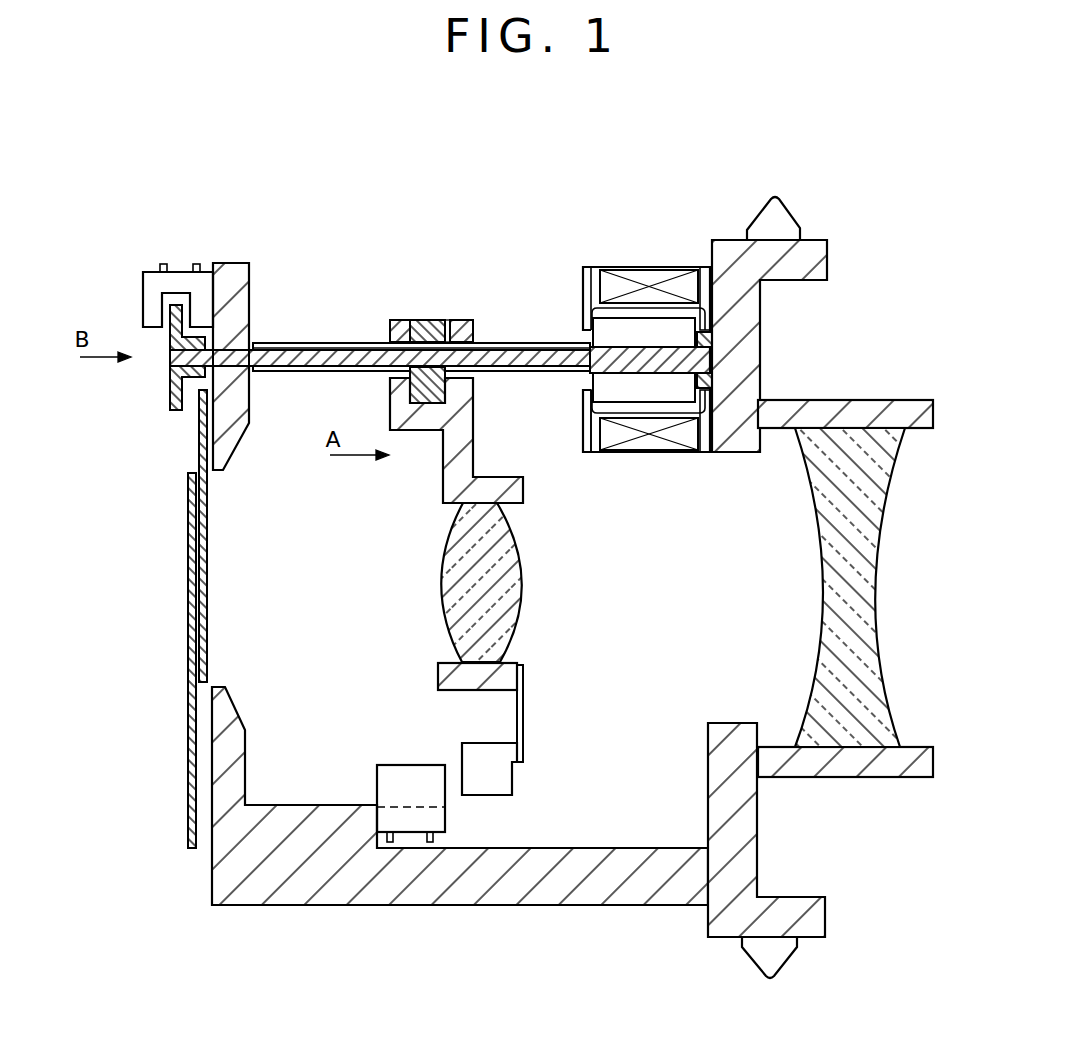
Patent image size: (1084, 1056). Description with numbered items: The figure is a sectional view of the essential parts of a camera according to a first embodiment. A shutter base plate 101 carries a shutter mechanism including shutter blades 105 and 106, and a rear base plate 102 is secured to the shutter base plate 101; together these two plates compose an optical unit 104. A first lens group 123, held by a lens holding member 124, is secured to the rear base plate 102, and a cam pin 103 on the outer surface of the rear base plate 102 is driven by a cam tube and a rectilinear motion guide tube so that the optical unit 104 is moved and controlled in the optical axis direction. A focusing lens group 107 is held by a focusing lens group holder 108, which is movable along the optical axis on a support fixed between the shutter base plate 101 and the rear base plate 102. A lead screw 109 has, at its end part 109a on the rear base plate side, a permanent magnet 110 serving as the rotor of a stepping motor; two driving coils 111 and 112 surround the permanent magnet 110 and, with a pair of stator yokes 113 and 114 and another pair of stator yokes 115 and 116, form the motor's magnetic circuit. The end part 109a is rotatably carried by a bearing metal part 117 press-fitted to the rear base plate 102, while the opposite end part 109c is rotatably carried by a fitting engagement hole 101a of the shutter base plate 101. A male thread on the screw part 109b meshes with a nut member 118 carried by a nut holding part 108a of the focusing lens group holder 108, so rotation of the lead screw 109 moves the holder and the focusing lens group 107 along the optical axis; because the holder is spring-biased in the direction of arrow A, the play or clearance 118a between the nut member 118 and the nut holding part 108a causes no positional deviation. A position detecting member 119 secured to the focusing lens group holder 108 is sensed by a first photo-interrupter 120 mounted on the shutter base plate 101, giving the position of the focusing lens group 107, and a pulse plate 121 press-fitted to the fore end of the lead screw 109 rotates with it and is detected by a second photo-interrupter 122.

The shutter base plate 101 is at (302, 888).
The fitting engagement hole 101a is at (222, 352).
The rear base plate 102 is at (733, 243).
The cam pin 103 is at (783, 217).
The optical unit 104 is at (434, 945).
The shutter blade 105 is at (188, 668).
The shutter blade 106 is at (207, 540).
The focusing lens group 107 is at (458, 612).
The focusing lens group holder 108 is at (496, 478).
The nut holding part 108a is at (400, 320).
The lead screw 109 is at (540, 355).
The end part of lead screw 109a is at (735, 360).
The screw part 109b is at (352, 343).
The end part of lead screw 109c is at (230, 345).
The permanent magnet 110 is at (634, 330).
The driving coil 111 is at (650, 268).
The driving coil 112 is at (650, 452).
The stator yoke 113 is at (592, 268).
The stator yoke 114 is at (708, 268).
The stator yoke 115 is at (597, 452).
The stator yoke 116 is at (704, 452).
The bearing metal part 117 is at (735, 340).
The nut member 118 is at (428, 320).
The play or clearance 118a is at (448, 320).
The position detecting member 119 is at (505, 781).
The first photo-interrupter 120 is at (435, 823).
The pulse plate 121 is at (172, 397).
The second photo-interrupter 122 is at (150, 288).
The first lens group 123 is at (885, 475).
The lens holding member 124 is at (912, 400).